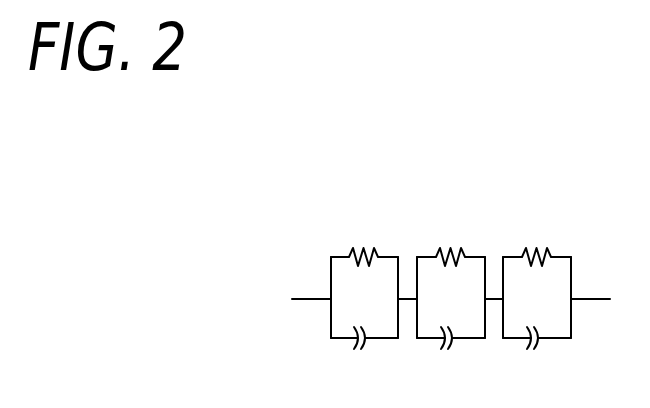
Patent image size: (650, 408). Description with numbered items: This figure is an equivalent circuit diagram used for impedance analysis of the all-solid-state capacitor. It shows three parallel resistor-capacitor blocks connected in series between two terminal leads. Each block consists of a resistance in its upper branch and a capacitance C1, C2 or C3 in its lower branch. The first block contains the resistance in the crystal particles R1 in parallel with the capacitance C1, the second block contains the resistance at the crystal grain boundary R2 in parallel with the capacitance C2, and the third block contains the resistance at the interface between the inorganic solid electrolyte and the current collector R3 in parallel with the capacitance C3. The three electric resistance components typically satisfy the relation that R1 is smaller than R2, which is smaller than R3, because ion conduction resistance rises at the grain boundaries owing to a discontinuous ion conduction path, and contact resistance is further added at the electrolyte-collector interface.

The resistance in the crystal particles R1 is at (364, 239).
The resistance at the crystal grain boundary R2 is at (451, 239).
The resistance at the interface between the inorganic solid electrolyte and the curr R3 is at (537, 239).
The first capacitor C1 is at (364, 361).
The second capacitor C2 is at (451, 361).
The third capacitor C3 is at (537, 361).